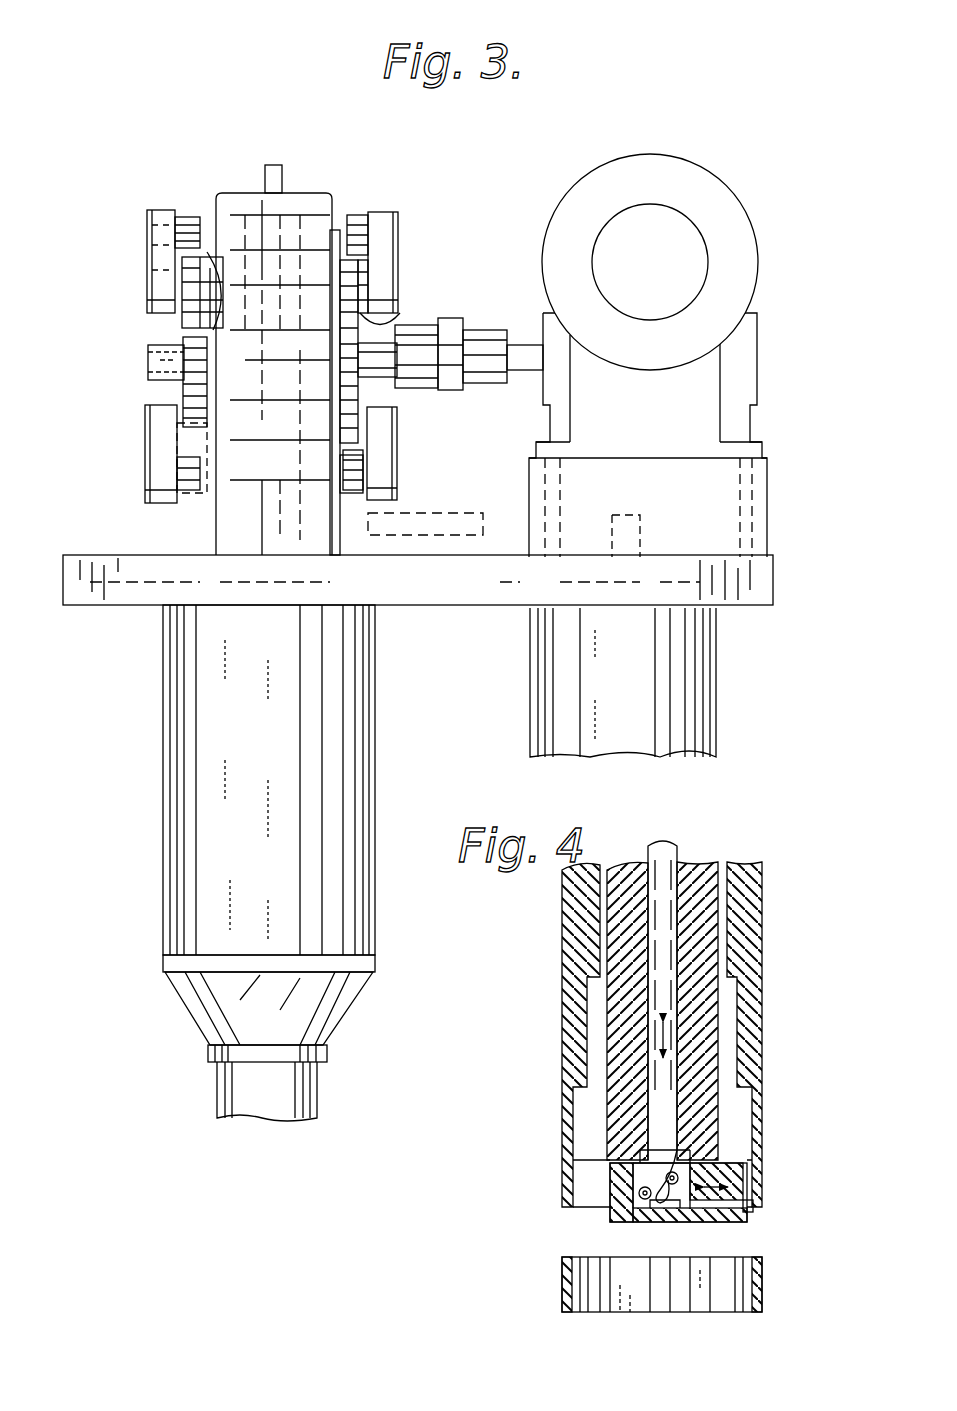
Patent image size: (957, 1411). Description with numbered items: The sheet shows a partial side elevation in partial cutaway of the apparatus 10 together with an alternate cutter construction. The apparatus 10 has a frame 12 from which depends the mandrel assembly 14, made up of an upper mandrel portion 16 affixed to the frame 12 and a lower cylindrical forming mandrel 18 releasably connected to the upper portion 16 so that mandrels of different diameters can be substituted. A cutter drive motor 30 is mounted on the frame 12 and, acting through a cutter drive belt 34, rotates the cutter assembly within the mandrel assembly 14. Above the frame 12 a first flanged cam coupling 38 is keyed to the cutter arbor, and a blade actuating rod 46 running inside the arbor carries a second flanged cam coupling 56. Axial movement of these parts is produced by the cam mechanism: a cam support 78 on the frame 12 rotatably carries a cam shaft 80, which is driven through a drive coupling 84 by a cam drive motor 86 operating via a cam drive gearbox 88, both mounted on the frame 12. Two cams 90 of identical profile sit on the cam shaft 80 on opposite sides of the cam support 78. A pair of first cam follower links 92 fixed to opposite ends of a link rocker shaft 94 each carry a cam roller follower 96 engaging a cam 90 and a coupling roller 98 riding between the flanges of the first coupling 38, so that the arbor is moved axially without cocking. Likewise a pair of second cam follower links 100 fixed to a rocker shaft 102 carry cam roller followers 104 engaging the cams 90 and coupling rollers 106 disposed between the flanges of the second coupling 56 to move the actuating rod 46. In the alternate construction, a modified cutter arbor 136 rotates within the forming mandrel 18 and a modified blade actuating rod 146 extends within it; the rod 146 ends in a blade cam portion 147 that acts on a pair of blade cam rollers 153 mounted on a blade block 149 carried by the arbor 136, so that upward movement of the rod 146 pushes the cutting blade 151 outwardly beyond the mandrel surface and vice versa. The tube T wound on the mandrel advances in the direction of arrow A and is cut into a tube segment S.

In FIG. 3, the apparatus 10 is at (497, 158).
In FIG. 3, the frame 12 is at (410, 606).
In FIG. 3, the mandrel assembly 14 is at (176, 862).
In FIG. 3, the upper mandrel portion 16 is at (345, 745).
In FIG. 3, the forming mandrel 18 is at (238, 1085).
In FIG. 4, the forming mandrel 18 is at (578, 938).
In FIG. 3, the cutter drive motor 30 is at (705, 660).
In FIG. 3, the cutter drive belt 34 is at (452, 540).
In FIG. 3, the first flanged cam coupling 38 is at (280, 480).
In FIG. 3, the blade actuating rod 46 is at (278, 173).
In FIG. 3, the second flanged cam coupling 56 is at (262, 255).
In FIG. 3, the cam support 78 is at (228, 540).
In FIG. 3, the cam shaft 80 is at (162, 349).
In FIG. 3, the drive coupling 84 is at (479, 332).
In FIG. 3, the cam drive motor 86 is at (730, 226).
In FIG. 3, the cam drive gearbox 88 is at (742, 355).
In FIG. 3, the cams 90 is at (190, 393).
In FIG. 3, the first cam follower links 92 is at (158, 425).
In FIG. 3, the link rocker shaft 94 is at (160, 470).
In FIG. 3, the cam roller follower 96 is at (188, 490).
In FIG. 3, the coupling roller 98 is at (366, 410).
In FIG. 3, the second cam follower links 100 is at (152, 215).
In FIG. 3, the rocker shaft 102 is at (150, 236).
In FIG. 3, the cam roller follower 104 is at (193, 222).
In FIG. 3, the coupling roller 106 is at (192, 304).
In FIG. 4, the modified cutter arbor 136 is at (695, 882).
In FIG. 4, the modified blade actuating rod 146 is at (657, 848).
In FIG. 4, the blade cam portion 147 is at (668, 1203).
In FIG. 4, the blade block 149 is at (610, 1214).
In FIG. 4, the cutting blade 151 is at (752, 1213).
In FIG. 4, the blade cam rollers 153 is at (698, 1172).
In FIG. 4, the tube T is at (763, 923).
In FIG. 4, the arrow A is at (780, 1050).
In FIG. 4, the tube segment S is at (765, 1288).